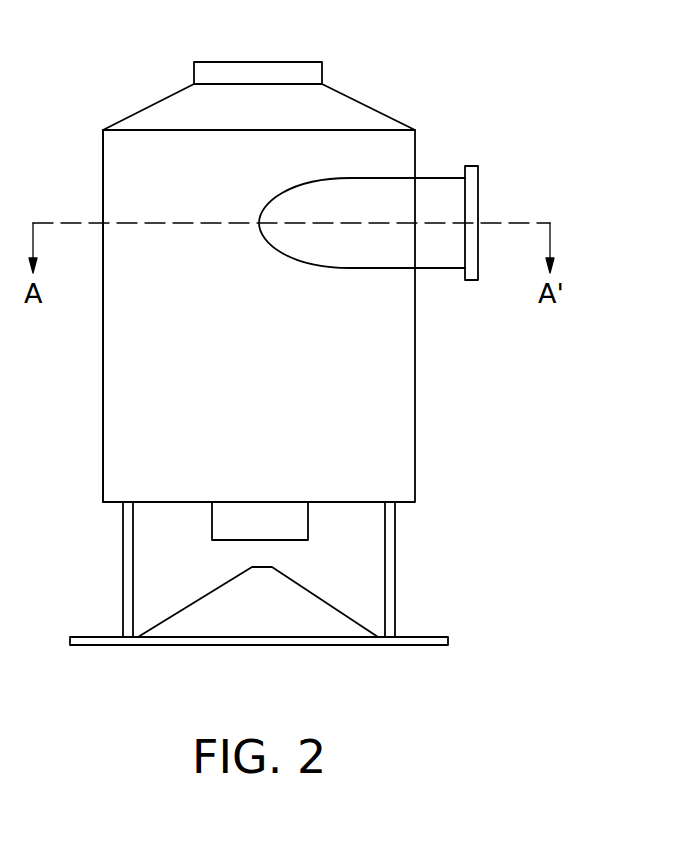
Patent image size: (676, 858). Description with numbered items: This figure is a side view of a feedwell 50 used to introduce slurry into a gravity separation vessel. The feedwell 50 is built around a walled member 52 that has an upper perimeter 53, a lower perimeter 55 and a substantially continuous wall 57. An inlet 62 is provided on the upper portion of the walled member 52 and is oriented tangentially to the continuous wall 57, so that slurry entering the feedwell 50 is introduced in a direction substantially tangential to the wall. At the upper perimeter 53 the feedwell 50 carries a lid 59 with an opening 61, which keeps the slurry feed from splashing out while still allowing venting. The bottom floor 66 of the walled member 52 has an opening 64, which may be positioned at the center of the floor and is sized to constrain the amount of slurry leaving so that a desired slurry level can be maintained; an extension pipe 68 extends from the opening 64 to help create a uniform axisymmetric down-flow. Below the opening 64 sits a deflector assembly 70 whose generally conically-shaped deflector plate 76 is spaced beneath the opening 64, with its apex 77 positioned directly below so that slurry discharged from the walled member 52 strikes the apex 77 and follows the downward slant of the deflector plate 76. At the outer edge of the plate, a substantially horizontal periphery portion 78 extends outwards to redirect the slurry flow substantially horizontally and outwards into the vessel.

The feedwell 50 is at (488, 94).
The walled member 52 is at (397, 381).
The upper perimeter 53 is at (326, 130).
The lower perimeter 55 is at (373, 502).
The continuous wall 57 is at (103, 378).
The lid 59 is at (149, 105).
The opening 61 is at (260, 72).
The inlet 62 is at (478, 185).
The opening 64 is at (285, 530).
The bottom floor 66 is at (361, 502).
The extension pipe 68 is at (212, 520).
The deflector assembly 70 is at (476, 632).
The deflector plate 76 is at (278, 605).
The apex 77 is at (268, 561).
The periphery portion 78 is at (95, 637).